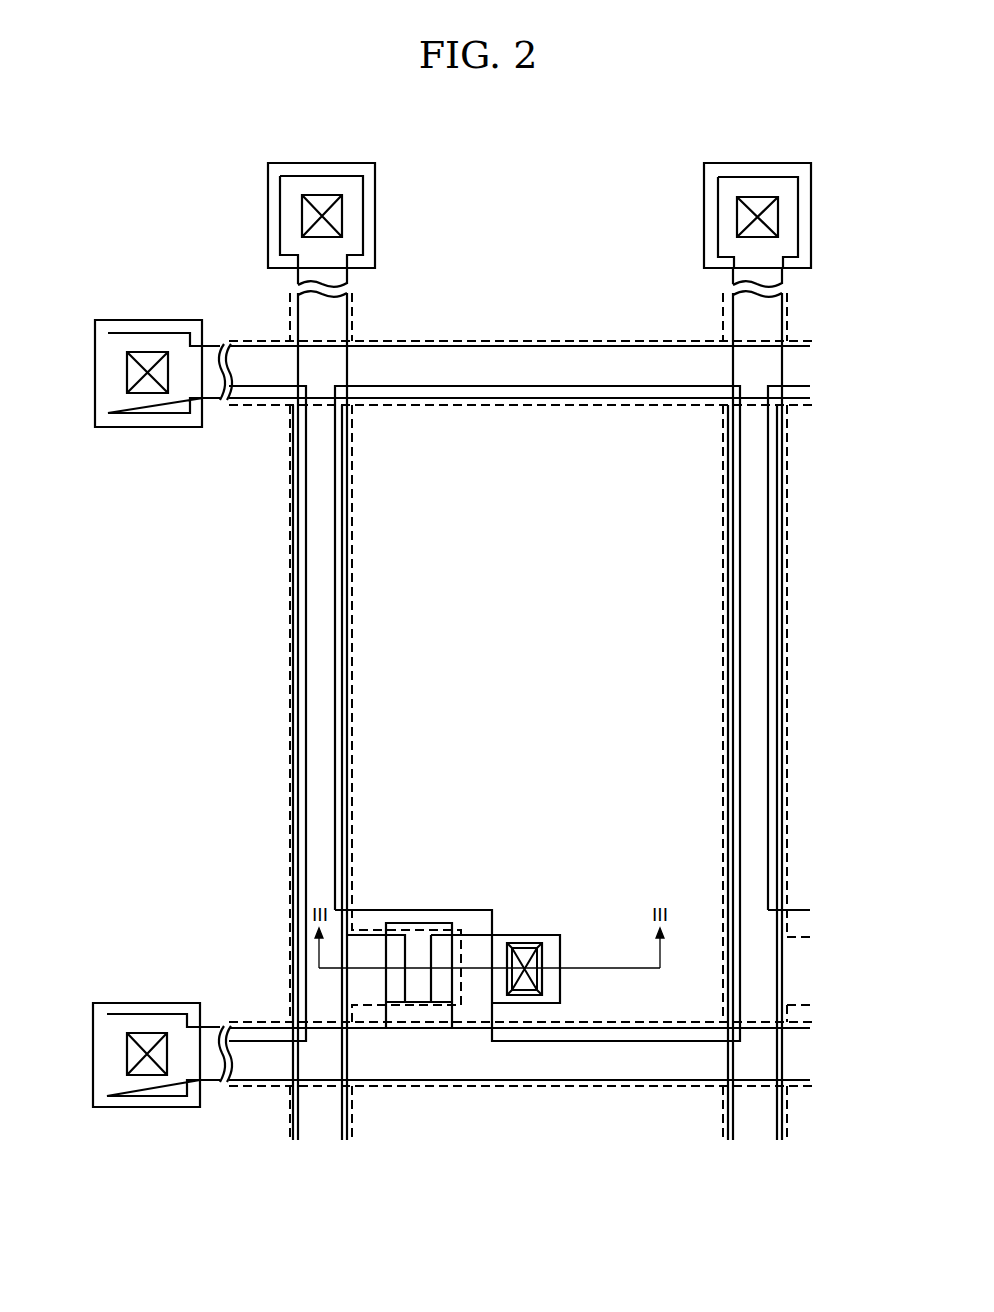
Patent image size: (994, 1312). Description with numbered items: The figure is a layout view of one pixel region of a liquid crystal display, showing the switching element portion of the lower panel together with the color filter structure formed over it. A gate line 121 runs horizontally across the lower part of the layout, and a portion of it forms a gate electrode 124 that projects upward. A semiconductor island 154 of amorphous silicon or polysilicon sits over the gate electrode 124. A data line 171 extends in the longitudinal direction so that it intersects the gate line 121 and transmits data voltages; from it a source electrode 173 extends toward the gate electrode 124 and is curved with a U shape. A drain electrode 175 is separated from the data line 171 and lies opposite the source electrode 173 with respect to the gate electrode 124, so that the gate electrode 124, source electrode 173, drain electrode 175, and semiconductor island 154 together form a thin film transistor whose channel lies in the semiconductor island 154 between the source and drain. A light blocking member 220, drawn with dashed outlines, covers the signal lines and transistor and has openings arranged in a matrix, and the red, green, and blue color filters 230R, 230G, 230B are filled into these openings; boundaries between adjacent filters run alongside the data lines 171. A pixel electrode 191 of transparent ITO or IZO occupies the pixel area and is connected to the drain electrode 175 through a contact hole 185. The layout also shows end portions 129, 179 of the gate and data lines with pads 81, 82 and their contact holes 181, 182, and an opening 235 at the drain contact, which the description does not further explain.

The gate pad 81 is at (172, 1108).
The data pad 82 is at (779, 162).
The gate line 121 is at (641, 1030).
The gate electrode 124 is at (453, 990).
The end portion of gate line 129 is at (120, 1097).
The semiconductor island 154 is at (418, 1004).
The data line 171 is at (345, 655).
The source electrode 173 is at (398, 1004).
The drain electrode 175 is at (528, 994).
The end portion of data line 179 is at (740, 176).
The contact hole 181 is at (143, 1032).
The contact hole 182 is at (779, 215).
The contact hole 185 is at (523, 942).
The pixel electrode 191 is at (746, 740).
The light blocking member 220 is at (350, 738).
The red color filter 230R is at (293, 530).
The green color filter 230G is at (728, 530).
The blue color filter 230B is at (777, 530).
The opening of light blocking member 235 is at (545, 954).